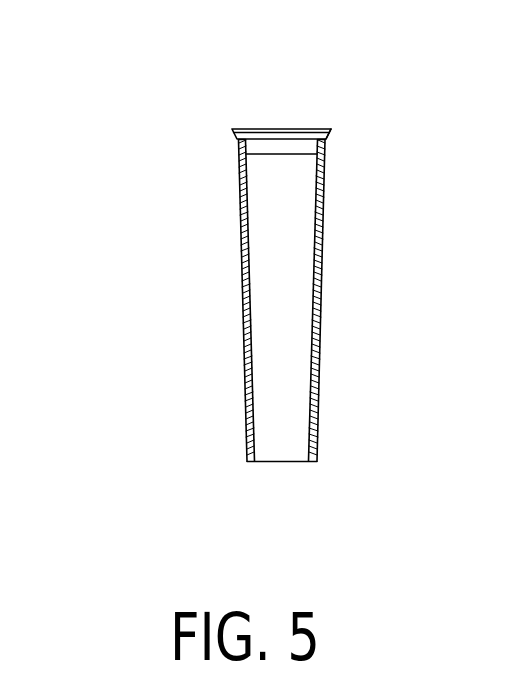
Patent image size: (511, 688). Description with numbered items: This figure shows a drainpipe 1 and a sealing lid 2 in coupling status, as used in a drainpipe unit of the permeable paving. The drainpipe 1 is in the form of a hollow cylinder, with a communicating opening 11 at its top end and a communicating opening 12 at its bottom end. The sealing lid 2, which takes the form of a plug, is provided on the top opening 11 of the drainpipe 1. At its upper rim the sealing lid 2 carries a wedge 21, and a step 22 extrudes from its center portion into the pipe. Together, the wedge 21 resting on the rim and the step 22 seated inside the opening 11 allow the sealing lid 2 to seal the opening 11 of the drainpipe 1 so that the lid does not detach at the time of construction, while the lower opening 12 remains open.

The drainpipe 1 is at (320, 265).
The opening 11 is at (237, 143).
The opening 12 is at (282, 462).
The sealing lid 2 is at (281, 130).
The wedge 21 is at (328, 139).
The step 22 is at (268, 154).